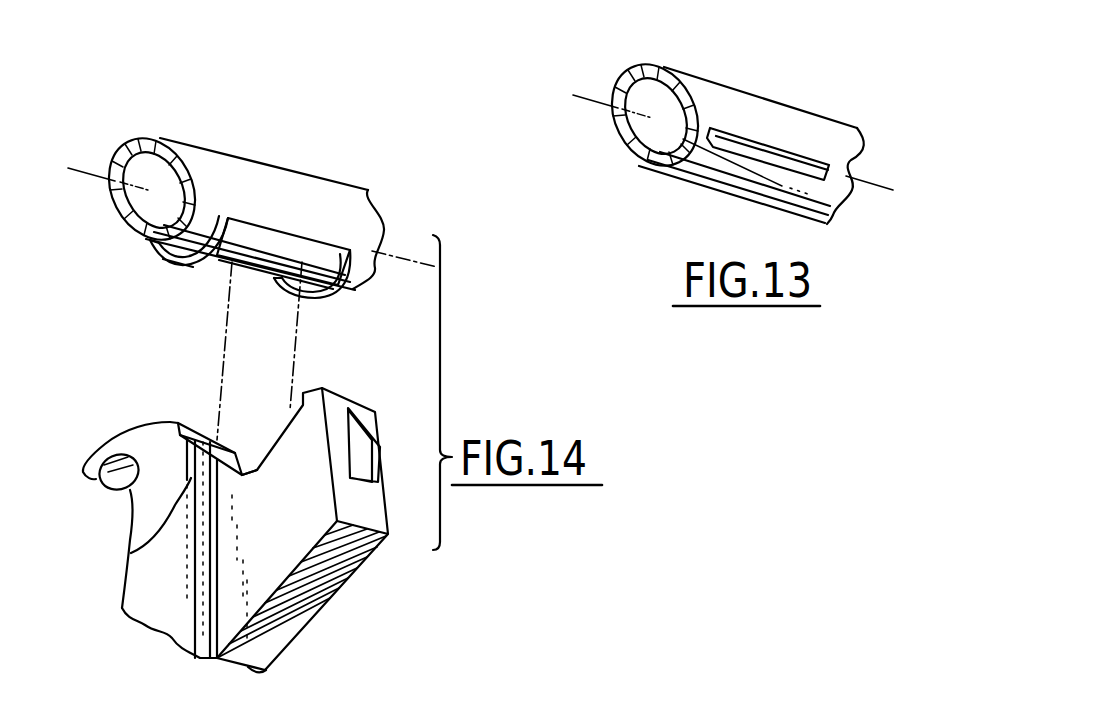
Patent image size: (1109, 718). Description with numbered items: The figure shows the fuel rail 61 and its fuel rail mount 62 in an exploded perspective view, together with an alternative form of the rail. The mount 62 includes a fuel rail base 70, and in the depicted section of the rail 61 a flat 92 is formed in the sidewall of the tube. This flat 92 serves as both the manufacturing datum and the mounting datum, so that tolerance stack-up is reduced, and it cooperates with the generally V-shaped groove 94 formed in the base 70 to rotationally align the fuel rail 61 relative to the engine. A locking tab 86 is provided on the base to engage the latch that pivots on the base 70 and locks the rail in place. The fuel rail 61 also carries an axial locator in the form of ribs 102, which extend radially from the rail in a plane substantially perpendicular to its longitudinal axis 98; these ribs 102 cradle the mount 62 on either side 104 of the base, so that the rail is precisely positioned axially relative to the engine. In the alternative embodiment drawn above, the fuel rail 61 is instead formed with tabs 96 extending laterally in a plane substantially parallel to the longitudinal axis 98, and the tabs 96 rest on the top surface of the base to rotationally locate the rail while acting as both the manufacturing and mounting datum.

In FIG. 13, the fuel rail 61 is at (716, 81).
In FIG. 14, the fuel rail 61 is at (340, 188).
In FIG. 14, the fuel rail mount 62 is at (326, 599).
In FIG. 14, the fuel rail base 70 is at (188, 629).
In FIG. 14, the locking tab 86 is at (378, 452).
In FIG. 14, the flat 92 is at (254, 236).
In FIG. 14, the V-shaped groove 94 is at (247, 462).
In FIG. 13, the tabs 96 is at (777, 147).
In FIG. 13, the longitudinal axis 98 is at (591, 100).
In FIG. 14, the longitudinal axis 98 is at (85, 168).
In FIG. 14, the rib 102 is at (208, 265).
In FIG. 14, the sides 104 is at (133, 549).